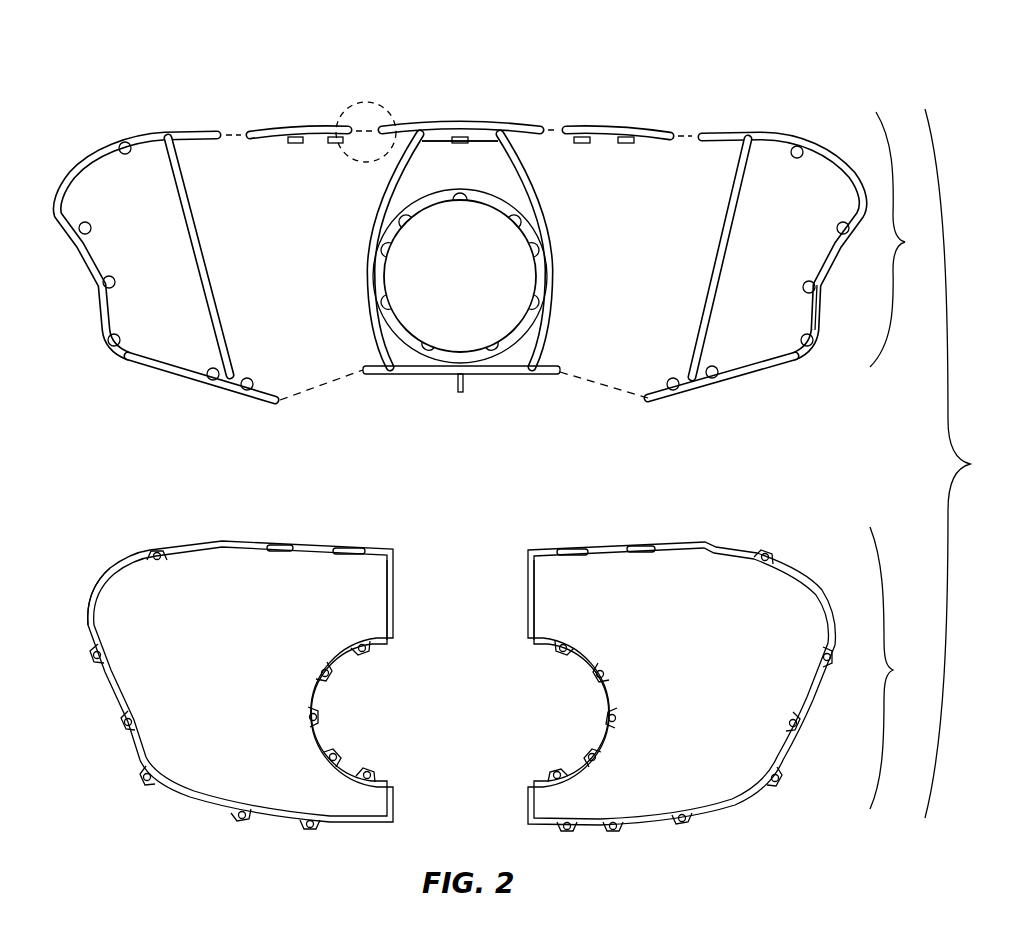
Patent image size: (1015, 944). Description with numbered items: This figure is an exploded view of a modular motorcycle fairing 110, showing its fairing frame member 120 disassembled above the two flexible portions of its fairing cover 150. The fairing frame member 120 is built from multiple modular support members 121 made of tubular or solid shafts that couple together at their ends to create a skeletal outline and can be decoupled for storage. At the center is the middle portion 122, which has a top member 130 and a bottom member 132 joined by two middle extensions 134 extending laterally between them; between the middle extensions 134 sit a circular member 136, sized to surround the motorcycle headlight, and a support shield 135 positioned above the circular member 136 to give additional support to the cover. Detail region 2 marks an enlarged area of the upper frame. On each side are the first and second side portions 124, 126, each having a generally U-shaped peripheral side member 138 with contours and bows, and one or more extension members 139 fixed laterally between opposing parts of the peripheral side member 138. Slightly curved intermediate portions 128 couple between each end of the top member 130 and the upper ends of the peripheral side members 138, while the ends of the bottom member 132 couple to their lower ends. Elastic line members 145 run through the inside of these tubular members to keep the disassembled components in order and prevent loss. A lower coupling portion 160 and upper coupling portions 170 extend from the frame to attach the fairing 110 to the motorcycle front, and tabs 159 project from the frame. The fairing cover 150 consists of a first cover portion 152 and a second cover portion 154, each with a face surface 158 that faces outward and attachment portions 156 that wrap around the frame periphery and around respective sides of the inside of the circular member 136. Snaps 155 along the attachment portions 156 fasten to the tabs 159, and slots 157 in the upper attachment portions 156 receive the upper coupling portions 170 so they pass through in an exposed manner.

The detail region 2 is at (356, 103).
The fairing 110 is at (970, 463).
The fairing frame member 120 is at (911, 239).
The modular support members 121 is at (830, 322).
The middle portion 122 is at (472, 93).
The first side portion 124 is at (107, 118).
The second side portion 126 is at (805, 122).
The intermediate portions 128 is at (313, 127).
The top member 130 is at (525, 122).
The bottom member 132 is at (503, 377).
The middle extensions 134 is at (542, 184).
The support shield 135 is at (497, 163).
The circular member 136 is at (550, 250).
The peripheral side member 138 is at (155, 363).
The extension members 139 is at (207, 257).
The line members 145 is at (308, 390).
The fairing cover 150 is at (905, 668).
The first cover portion 152 is at (189, 524).
The second cover portion 154 is at (734, 530).
The snaps 155 is at (95, 660).
The attachment portions 156 is at (345, 765).
The slots 157 is at (280, 541).
The face surface 158 is at (372, 592).
The tabs 159 is at (93, 226).
The lower coupling portion 160 is at (444, 402).
The upper coupling portions 170 is at (447, 136).